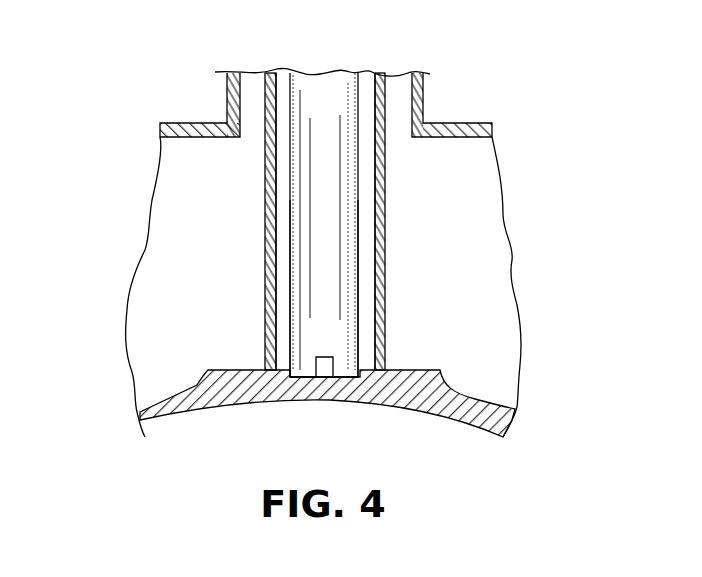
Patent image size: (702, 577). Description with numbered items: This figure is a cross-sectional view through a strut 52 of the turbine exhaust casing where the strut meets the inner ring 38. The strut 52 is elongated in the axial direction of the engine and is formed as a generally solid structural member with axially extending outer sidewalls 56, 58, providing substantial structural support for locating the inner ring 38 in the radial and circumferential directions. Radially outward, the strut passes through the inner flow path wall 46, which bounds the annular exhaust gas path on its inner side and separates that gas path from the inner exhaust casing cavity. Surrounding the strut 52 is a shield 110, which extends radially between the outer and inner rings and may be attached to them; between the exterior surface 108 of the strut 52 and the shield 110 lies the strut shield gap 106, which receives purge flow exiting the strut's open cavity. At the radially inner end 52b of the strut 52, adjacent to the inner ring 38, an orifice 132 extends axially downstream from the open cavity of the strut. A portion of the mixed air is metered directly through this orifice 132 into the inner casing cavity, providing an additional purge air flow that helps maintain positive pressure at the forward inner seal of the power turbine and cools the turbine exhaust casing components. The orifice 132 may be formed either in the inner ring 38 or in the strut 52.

The inner ring 38 is at (457, 397).
The inner flow path wall 46 is at (207, 125).
The strut 52 is at (337, 185).
The radially inner end of the strut 52b is at (307, 370).
The outer sidewall 56 is at (360, 323).
The outer sidewall 58 is at (290, 310).
The strut shield gap 106 is at (282, 347).
The exterior surface of the strut 108 is at (290, 198).
The shield 110 is at (270, 253).
The orifice 132 is at (323, 370).